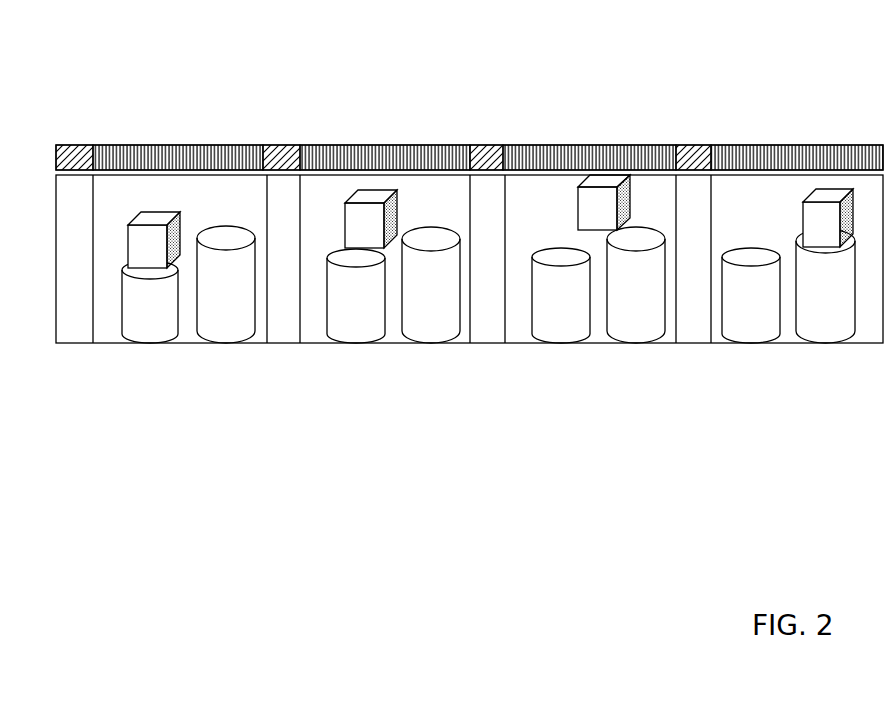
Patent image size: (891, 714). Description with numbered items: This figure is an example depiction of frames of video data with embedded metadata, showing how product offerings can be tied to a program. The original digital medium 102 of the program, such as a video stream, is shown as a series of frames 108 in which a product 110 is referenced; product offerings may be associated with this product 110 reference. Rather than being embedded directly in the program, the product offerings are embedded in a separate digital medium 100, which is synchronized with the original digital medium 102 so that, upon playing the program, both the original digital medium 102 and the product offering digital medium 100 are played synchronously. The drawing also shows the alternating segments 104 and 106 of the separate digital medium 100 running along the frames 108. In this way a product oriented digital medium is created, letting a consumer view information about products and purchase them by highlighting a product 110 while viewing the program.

The separate digital medium 100 is at (505, 130).
The original digital medium 102 is at (322, 372).
The shelf edge divider segment 104 is at (82, 146).
The electronic label display segment 106 is at (168, 146).
The frame 108 is at (187, 344).
The product 110 is at (215, 265).